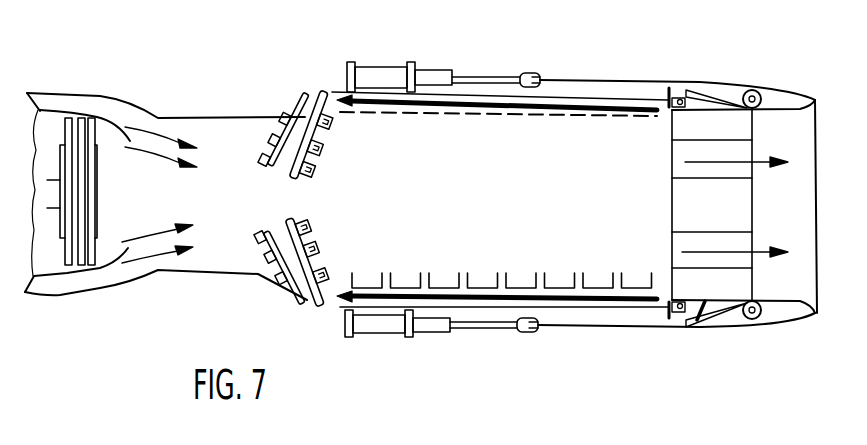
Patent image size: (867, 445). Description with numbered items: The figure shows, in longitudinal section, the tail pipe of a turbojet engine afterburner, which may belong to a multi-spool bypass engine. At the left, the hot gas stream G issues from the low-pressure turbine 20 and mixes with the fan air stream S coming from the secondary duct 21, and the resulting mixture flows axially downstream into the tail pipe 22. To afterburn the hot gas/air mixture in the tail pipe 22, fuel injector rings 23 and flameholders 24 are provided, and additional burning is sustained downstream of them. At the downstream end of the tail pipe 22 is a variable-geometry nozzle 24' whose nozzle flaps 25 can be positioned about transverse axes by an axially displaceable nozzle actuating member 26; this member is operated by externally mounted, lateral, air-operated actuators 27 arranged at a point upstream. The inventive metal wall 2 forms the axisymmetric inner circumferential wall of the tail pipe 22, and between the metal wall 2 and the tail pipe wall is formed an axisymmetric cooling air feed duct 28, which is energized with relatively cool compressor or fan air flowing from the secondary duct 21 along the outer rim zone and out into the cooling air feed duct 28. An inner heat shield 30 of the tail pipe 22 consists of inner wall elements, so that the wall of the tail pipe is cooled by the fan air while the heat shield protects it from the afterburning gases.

The metal wall 2 is at (622, 106).
The low-pressure turbine 20 is at (58, 253).
The secondary duct 21 is at (65, 98).
The tail pipe 22 is at (483, 310).
The fuel injector rings 23 is at (265, 162).
The flameholders 24 is at (344, 199).
The variable-geometry nozzle 24' is at (687, 350).
The nozzle flaps 25 is at (777, 100).
The nozzle actuating member 26 is at (608, 77).
The air-operated actuators 27 is at (388, 77).
The cooling air feed duct 28 is at (483, 100).
The inner heat shield 30 is at (522, 117).
The fan air stream S is at (163, 140).
The hot gas stream G is at (120, 263).